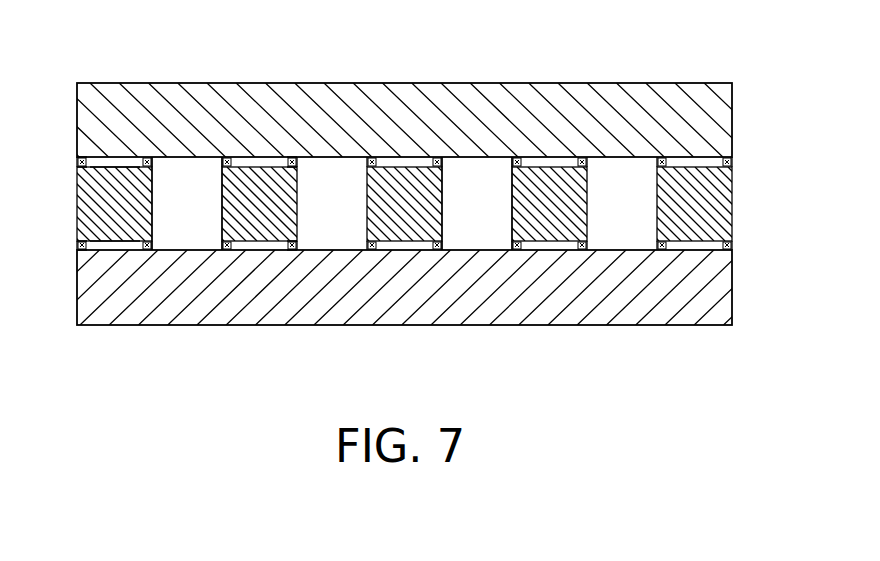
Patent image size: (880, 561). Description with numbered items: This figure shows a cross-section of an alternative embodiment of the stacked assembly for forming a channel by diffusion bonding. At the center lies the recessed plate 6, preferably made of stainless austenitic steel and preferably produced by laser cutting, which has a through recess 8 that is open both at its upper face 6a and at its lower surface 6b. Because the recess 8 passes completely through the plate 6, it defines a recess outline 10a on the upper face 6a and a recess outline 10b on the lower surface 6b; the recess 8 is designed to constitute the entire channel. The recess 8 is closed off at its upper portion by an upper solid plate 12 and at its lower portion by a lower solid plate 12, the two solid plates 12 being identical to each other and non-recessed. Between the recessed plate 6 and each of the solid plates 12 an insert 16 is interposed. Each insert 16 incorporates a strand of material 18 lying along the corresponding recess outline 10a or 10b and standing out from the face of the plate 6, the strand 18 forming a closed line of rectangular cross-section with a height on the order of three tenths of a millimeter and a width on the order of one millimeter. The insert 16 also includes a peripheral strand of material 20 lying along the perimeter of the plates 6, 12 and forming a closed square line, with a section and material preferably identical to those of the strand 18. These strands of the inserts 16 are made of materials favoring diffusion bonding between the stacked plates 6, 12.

The recessed plate 6 is at (733, 198).
The upper face 6a is at (116, 167).
The lower surface 6b is at (115, 243).
The through recess 8 is at (485, 213).
The recess outline 10a is at (208, 158).
The recess outline 10b is at (212, 243).
The solid plate 12 is at (705, 110).
The insert 16 is at (734, 162).
The strand of material 18 is at (296, 158).
The peripheral strand of material 20 is at (78, 161).